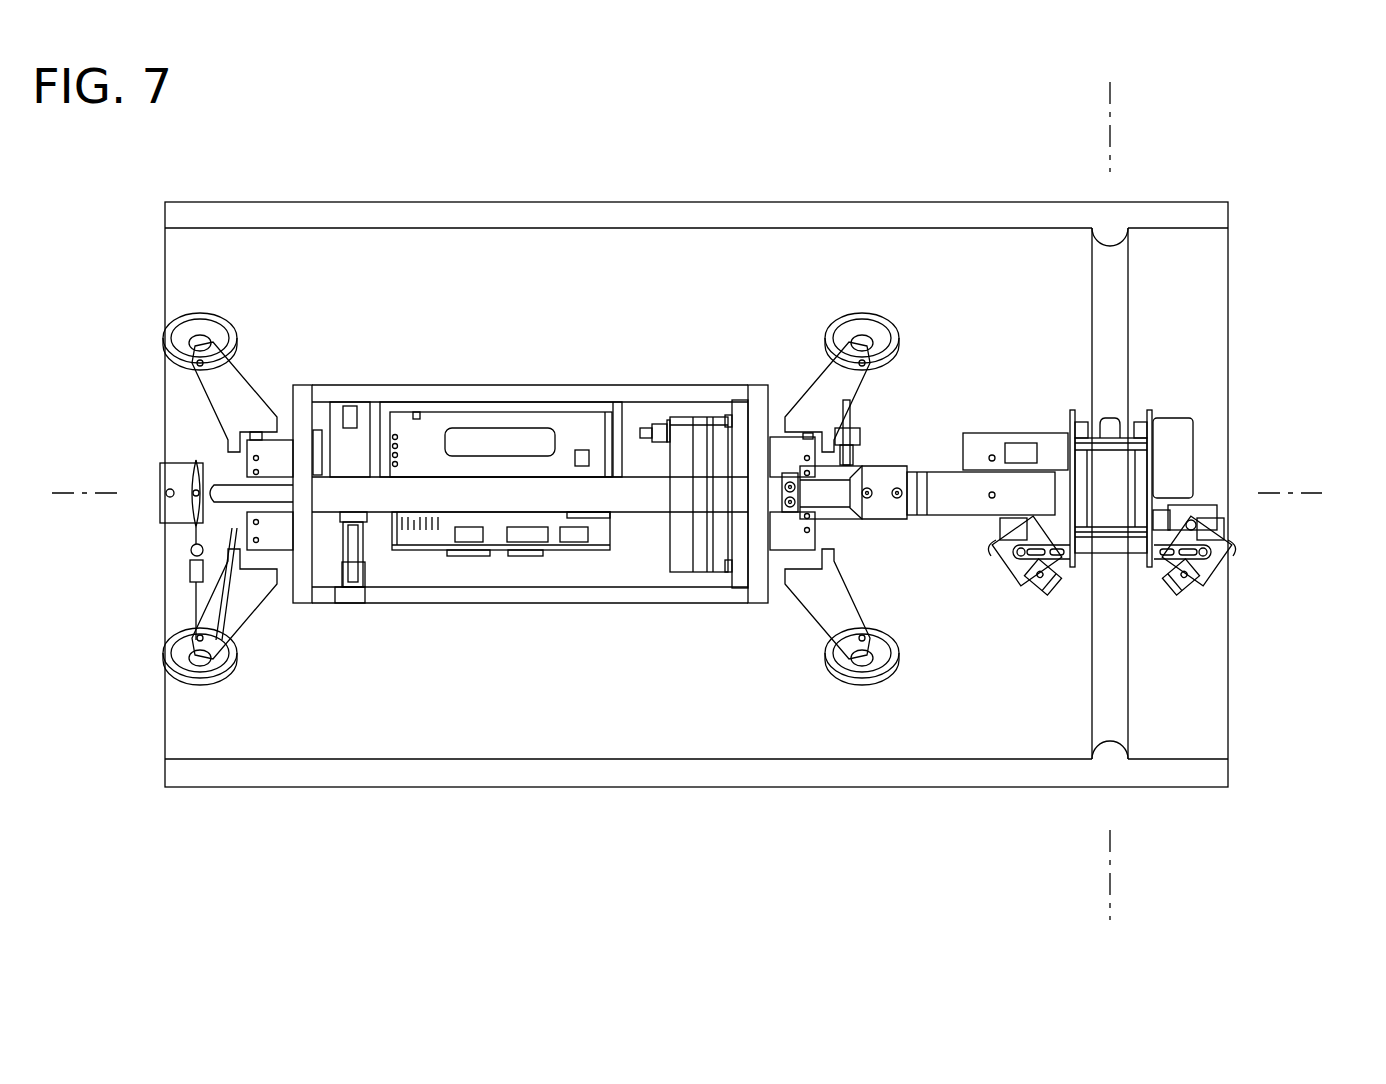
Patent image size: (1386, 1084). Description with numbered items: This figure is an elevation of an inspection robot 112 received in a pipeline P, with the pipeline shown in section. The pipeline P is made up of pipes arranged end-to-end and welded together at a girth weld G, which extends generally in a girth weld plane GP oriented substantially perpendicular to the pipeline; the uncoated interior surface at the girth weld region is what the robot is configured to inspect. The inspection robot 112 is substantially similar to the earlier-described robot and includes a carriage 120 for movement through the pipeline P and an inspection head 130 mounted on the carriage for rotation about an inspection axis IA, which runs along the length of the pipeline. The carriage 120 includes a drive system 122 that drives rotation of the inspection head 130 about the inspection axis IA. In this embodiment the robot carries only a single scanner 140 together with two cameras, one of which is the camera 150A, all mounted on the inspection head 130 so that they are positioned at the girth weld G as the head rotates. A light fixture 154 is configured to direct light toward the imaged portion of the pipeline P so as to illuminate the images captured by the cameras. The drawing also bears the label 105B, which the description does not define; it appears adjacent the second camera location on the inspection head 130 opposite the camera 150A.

The inspection robot 112 is at (273, 891).
The carriage 120 is at (466, 606).
The drive system 122 is at (668, 580).
The inspection head 130 is at (966, 603).
The scanner 140 is at (1137, 548).
The camera 150A is at (1017, 580).
The clamp arm 105B is at (1212, 575).
The light fixture 154 is at (1215, 519).
The pipeline P is at (303, 200).
The girth weld G is at (1108, 242).
The girth weld plane GP is at (1112, 505).
The inspection axis IA is at (708, 494).